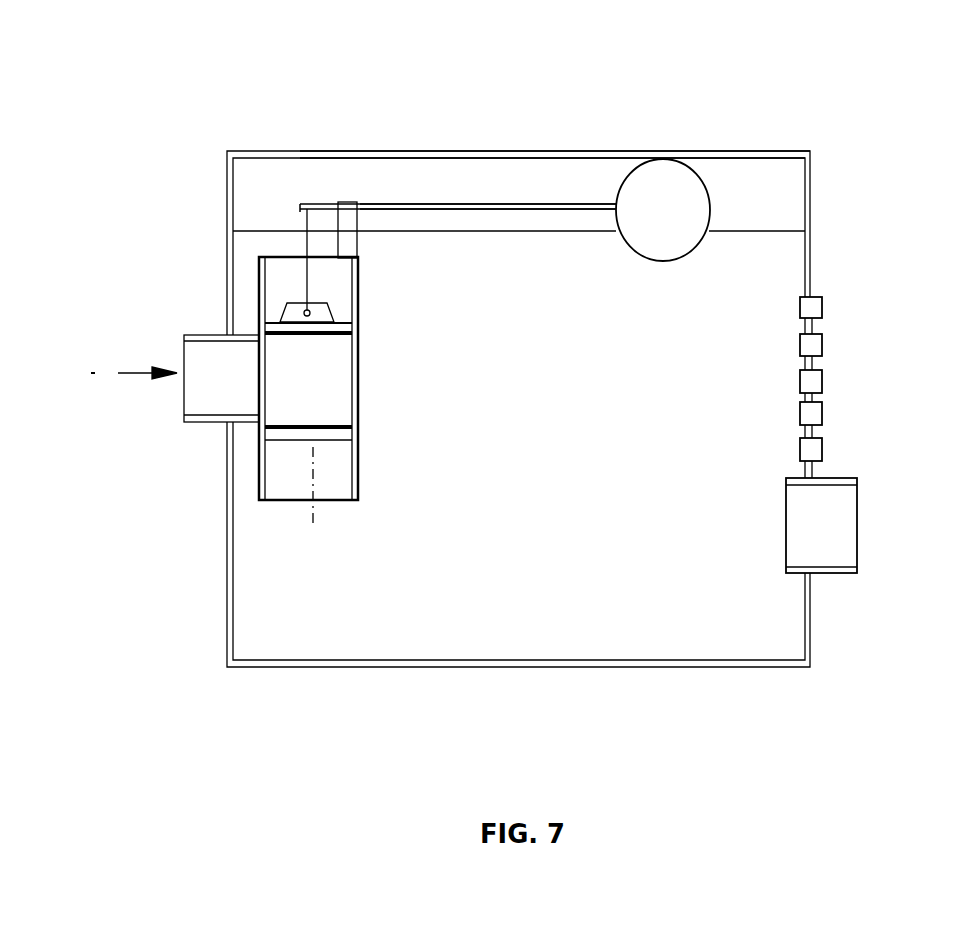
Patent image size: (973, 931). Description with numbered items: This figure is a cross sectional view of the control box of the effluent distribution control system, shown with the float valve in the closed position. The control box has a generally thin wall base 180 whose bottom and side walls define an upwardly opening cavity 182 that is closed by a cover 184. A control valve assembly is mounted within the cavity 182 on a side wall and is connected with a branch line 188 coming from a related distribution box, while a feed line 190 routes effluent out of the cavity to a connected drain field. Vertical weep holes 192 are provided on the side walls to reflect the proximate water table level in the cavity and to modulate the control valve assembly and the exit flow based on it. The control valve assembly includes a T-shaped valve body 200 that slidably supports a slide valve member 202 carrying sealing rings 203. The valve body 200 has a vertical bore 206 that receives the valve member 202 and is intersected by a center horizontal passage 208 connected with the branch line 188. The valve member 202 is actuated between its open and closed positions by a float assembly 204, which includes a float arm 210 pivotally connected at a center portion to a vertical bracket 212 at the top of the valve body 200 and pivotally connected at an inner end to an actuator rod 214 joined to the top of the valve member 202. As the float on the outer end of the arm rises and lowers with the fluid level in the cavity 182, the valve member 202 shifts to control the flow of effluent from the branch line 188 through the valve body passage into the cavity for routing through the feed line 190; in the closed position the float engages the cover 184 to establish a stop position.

The base 180 is at (812, 638).
The cavity 182 is at (594, 469).
The cover 184 is at (780, 152).
The branch line 188 is at (203, 423).
The feed line 190 is at (845, 480).
The weep holes 192 is at (822, 300).
The valve body 200 is at (360, 485).
The slide valve member 202 is at (333, 437).
The sealing rings 203 is at (353, 427).
The float assembly 204 is at (572, 190).
The vertical bore 206 is at (470, 203).
The center horizontal passage 208 is at (347, 202).
The float arm 210 is at (307, 278).
The vertical bracket 212 is at (323, 311).
The actuator rod 214 is at (660, 178).